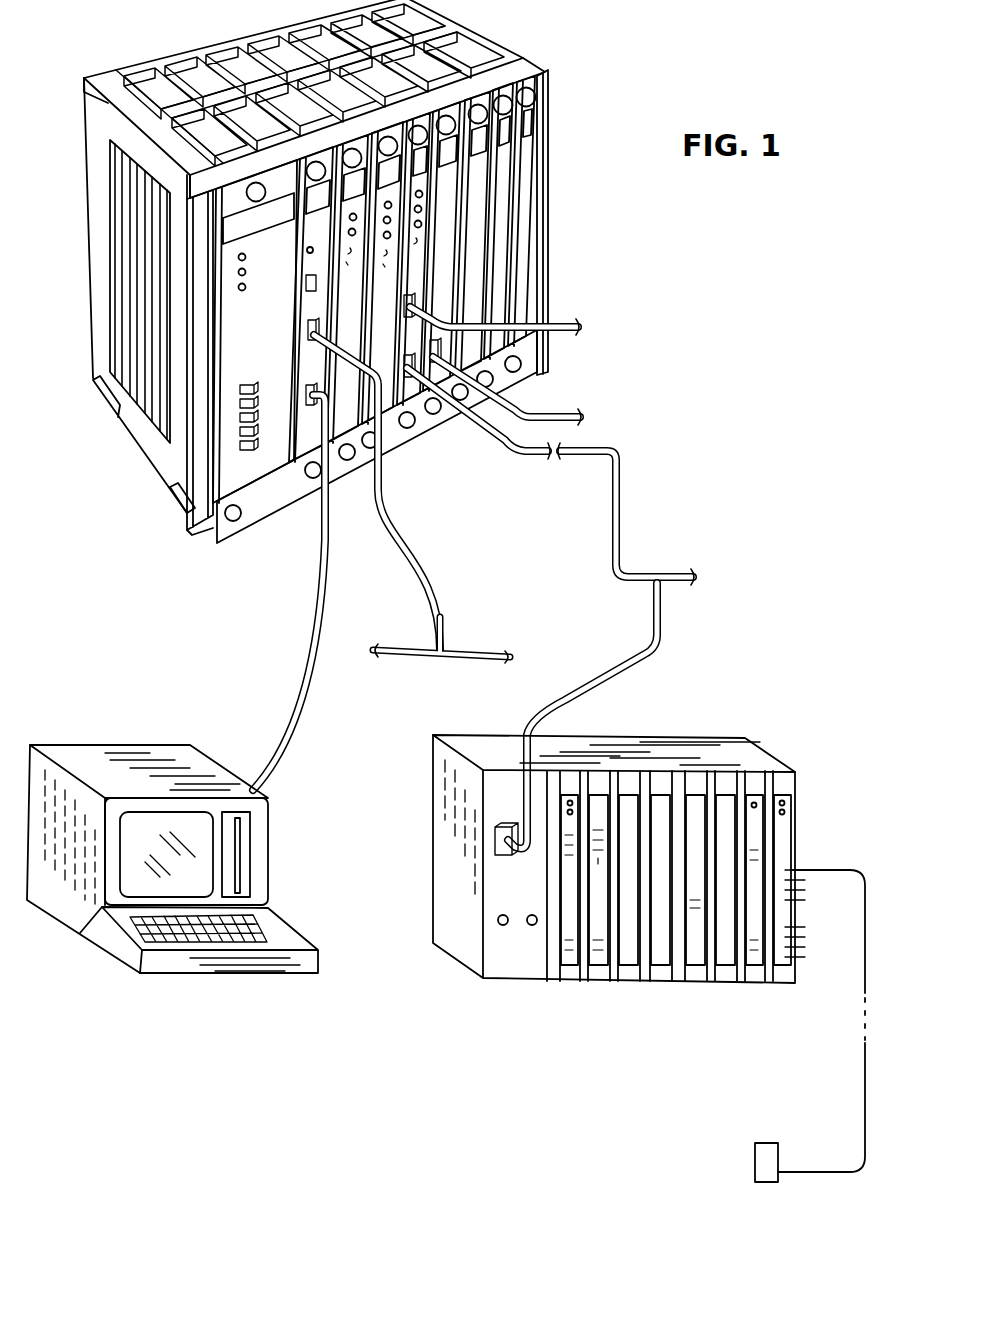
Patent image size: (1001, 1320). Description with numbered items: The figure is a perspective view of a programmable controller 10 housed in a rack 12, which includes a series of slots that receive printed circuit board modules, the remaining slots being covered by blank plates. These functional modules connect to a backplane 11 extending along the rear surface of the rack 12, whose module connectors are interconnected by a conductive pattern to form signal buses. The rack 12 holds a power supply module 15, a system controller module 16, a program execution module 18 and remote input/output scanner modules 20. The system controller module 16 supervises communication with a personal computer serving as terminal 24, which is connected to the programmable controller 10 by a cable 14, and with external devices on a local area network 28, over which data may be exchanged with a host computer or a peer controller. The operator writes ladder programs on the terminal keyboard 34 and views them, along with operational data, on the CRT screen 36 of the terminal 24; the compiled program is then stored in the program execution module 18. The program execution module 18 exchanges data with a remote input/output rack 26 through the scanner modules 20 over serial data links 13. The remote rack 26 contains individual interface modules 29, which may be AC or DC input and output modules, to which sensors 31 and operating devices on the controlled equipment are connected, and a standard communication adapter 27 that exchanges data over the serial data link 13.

The programmable controller 10 is at (168, 443).
The backplane 11 is at (184, 48).
The rack 12 is at (170, 467).
The serial data link 13 is at (552, 333).
The cable 14 is at (292, 736).
The power supply module 15 is at (280, 508).
The system controller module 16 is at (310, 495).
The program execution module 18 is at (353, 470).
The remote input/output scanner module 20 is at (420, 428).
The terminal 24 is at (260, 853).
The remote input/output rack 26 is at (455, 902).
The communication adapter 27 is at (502, 976).
The local area network 28 is at (470, 655).
The interface module 29 is at (779, 983).
The sensor 31 is at (768, 1155).
The terminal keyboard 34 is at (148, 923).
The CRT screen 36 is at (130, 882).